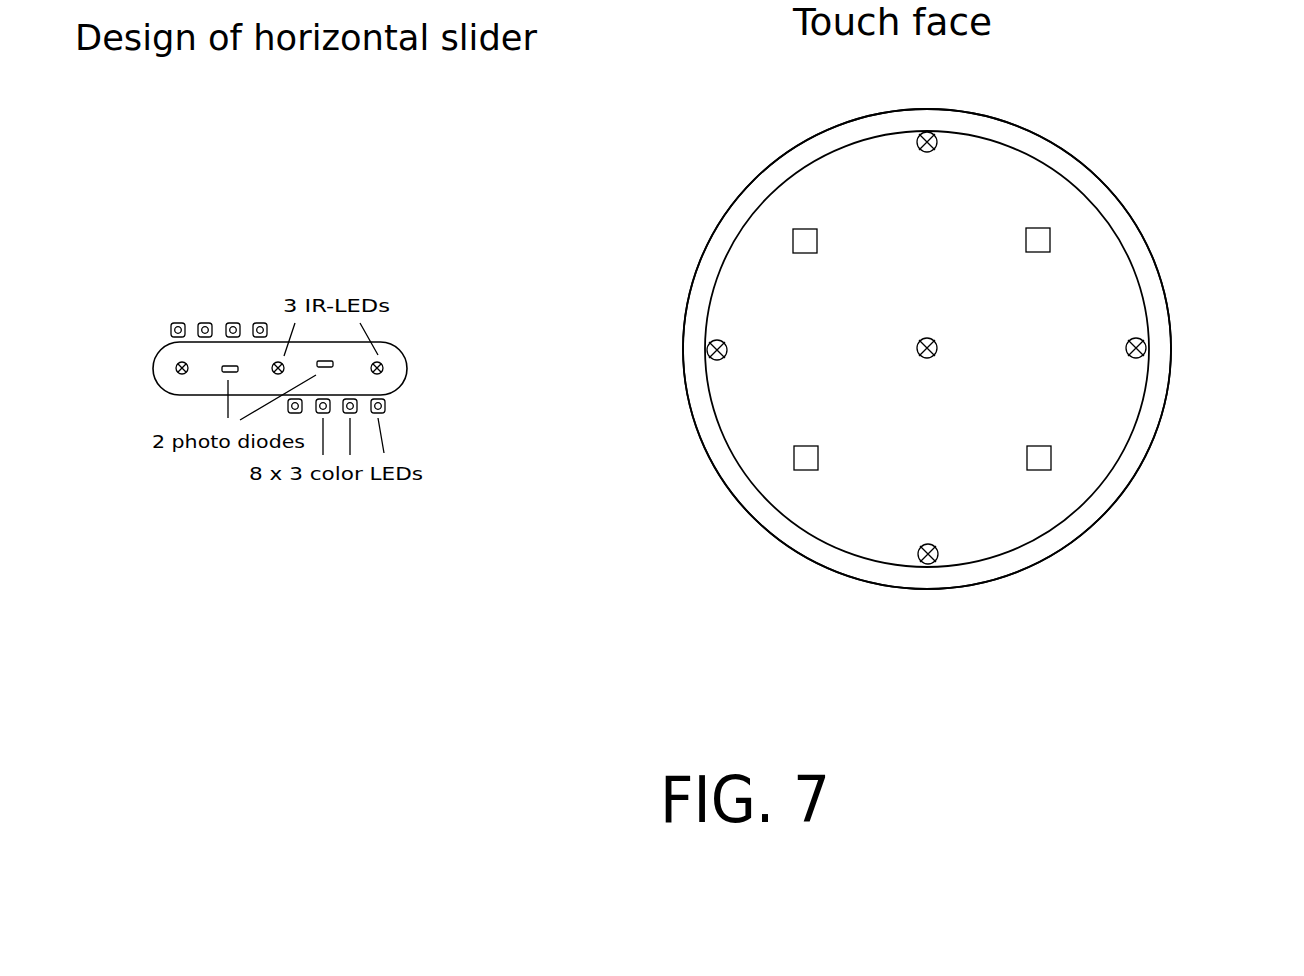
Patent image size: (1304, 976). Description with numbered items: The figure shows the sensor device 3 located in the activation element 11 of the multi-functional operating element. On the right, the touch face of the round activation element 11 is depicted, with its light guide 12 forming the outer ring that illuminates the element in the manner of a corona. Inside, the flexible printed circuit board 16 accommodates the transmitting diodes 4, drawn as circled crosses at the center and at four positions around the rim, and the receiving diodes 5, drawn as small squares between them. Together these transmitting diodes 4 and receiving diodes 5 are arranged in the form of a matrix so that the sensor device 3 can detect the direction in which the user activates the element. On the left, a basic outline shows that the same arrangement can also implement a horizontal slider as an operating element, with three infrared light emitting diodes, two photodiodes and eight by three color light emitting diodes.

The sensor device 3 is at (1096, 404).
The transmitting diodes 4 is at (926, 364).
The receiving diodes 5 is at (1054, 469).
The activation element 11 is at (1016, 121).
The light guide 12 is at (929, 584).
The flexible printed circuit board 16 is at (1071, 295).